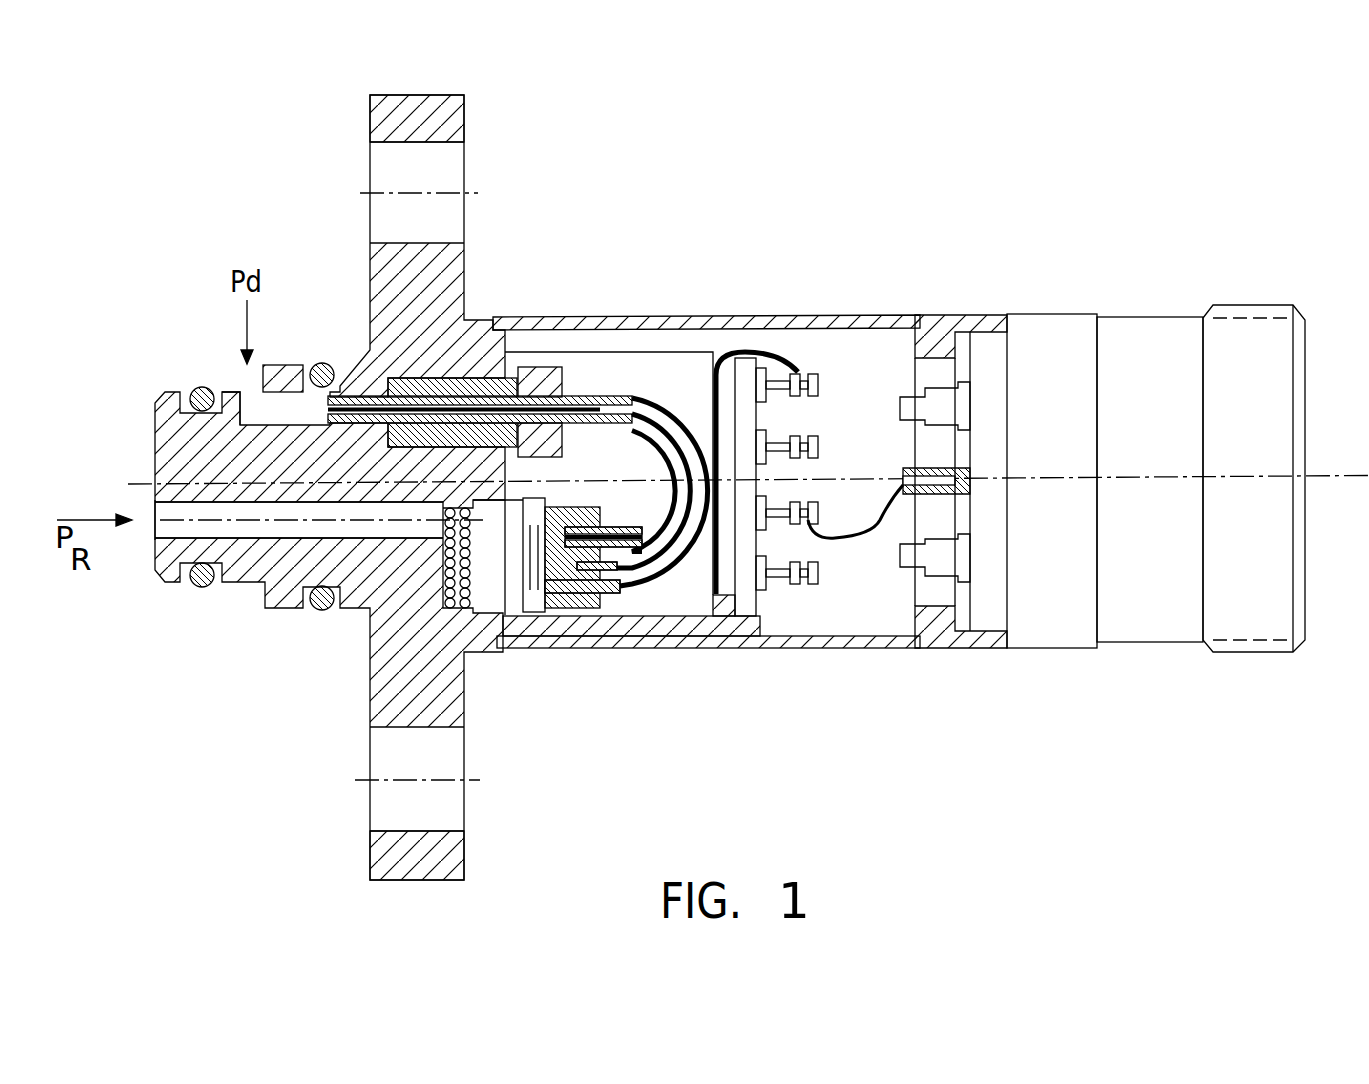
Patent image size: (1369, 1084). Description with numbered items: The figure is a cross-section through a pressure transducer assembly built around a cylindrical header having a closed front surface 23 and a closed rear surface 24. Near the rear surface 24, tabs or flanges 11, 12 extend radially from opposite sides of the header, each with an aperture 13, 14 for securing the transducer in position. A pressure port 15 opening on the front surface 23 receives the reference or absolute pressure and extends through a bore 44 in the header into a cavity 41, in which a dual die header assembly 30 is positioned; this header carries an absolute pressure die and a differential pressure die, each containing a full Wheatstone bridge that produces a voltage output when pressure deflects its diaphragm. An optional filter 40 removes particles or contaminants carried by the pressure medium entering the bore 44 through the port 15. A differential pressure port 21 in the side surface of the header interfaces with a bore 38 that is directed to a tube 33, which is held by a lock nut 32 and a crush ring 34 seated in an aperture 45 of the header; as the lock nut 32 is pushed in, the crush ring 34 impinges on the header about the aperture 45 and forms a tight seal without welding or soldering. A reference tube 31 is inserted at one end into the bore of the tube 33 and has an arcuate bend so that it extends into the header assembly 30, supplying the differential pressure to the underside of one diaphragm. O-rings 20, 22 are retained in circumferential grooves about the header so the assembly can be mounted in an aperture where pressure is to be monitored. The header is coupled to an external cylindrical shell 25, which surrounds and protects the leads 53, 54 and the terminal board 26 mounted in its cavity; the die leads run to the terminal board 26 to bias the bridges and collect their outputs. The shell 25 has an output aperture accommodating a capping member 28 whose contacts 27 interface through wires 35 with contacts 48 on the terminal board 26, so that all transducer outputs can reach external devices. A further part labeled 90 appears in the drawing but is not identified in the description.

The extending tab 11 is at (433, 265).
The extending tab 12 is at (377, 855).
The aperture 13 is at (433, 162).
The aperture 14 is at (362, 781).
The pressure port 15 is at (153, 527).
The O-ring 20 is at (200, 593).
The differential pressure port 21 is at (245, 385).
The O-ring 22 is at (317, 613).
The top surface 23 is at (155, 445).
The rear surface 24 is at (547, 457).
The external cylindrical shell 25 is at (892, 318).
The terminal board 26 is at (753, 598).
The contacts 27 is at (953, 403).
The output capping member 28 is at (1250, 655).
The dual die header assembly 30 is at (575, 612).
The reference tube 31 is at (675, 400).
The lock nut 32 is at (640, 395).
The tube 33 is at (588, 403).
The crush ring 34 is at (363, 372).
The wires 35 is at (878, 530).
The bore 38 is at (281, 383).
The filter 40 is at (443, 610).
The cavity 41 is at (522, 615).
The bore 44 is at (250, 520).
The aperture 45 is at (488, 340).
The contacts 48 is at (815, 372).
The lead 53 is at (612, 600).
The lead 54 is at (615, 575).
The piston 90 is at (513, 598).